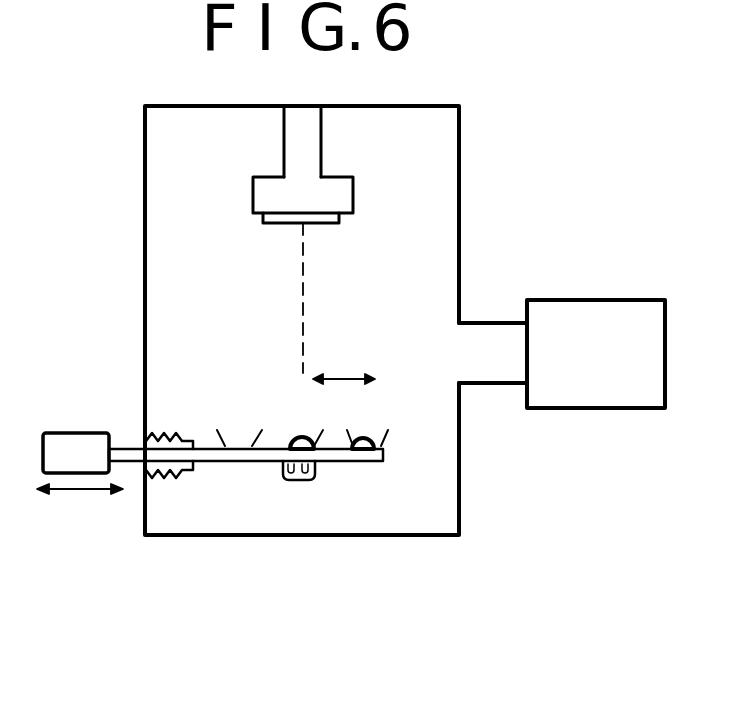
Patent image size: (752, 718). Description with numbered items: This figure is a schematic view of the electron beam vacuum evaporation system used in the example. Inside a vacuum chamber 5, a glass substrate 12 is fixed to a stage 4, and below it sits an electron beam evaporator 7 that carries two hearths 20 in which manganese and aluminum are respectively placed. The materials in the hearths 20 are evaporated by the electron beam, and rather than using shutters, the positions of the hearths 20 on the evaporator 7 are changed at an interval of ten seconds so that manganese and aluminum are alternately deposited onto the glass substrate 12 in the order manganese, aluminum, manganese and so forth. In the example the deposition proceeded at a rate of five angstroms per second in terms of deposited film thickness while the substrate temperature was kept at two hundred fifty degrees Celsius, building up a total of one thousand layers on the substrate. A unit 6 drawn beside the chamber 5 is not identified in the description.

The stage 4 is at (253, 190).
The glass substrate 12 is at (279, 221).
The vacuum chamber 5 is at (461, 157).
The control unit 6 is at (602, 367).
The electron beam evaporator 7 is at (250, 462).
The hearths 20 is at (285, 436).